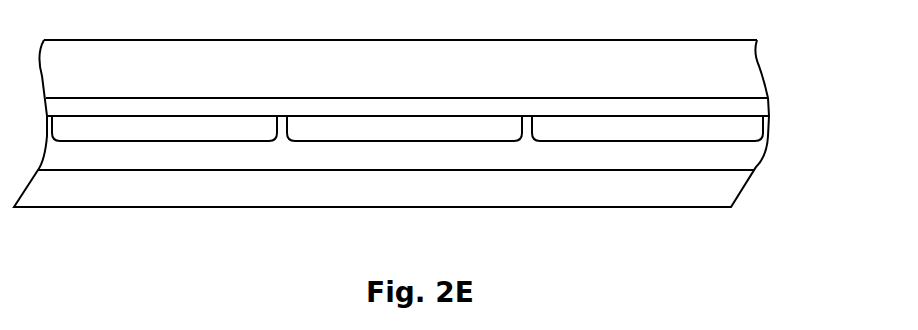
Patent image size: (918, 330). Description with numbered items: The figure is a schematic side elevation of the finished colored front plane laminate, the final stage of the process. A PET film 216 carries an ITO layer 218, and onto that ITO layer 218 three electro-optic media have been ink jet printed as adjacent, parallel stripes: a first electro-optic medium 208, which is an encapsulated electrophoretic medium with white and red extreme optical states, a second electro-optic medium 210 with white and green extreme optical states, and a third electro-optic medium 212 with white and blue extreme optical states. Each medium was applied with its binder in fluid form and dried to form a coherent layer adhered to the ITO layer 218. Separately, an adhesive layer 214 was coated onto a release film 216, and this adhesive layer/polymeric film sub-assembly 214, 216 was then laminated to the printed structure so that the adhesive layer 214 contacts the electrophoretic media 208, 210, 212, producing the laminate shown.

The first electro-optic medium 208 is at (157, 128).
The second electro-optic medium 210 is at (397, 128).
The third electro-optic medium 212 is at (621, 130).
The adhesive layer 214 is at (688, 153).
The PET film 216 is at (373, 77).
The ITO layer 218 is at (740, 106).